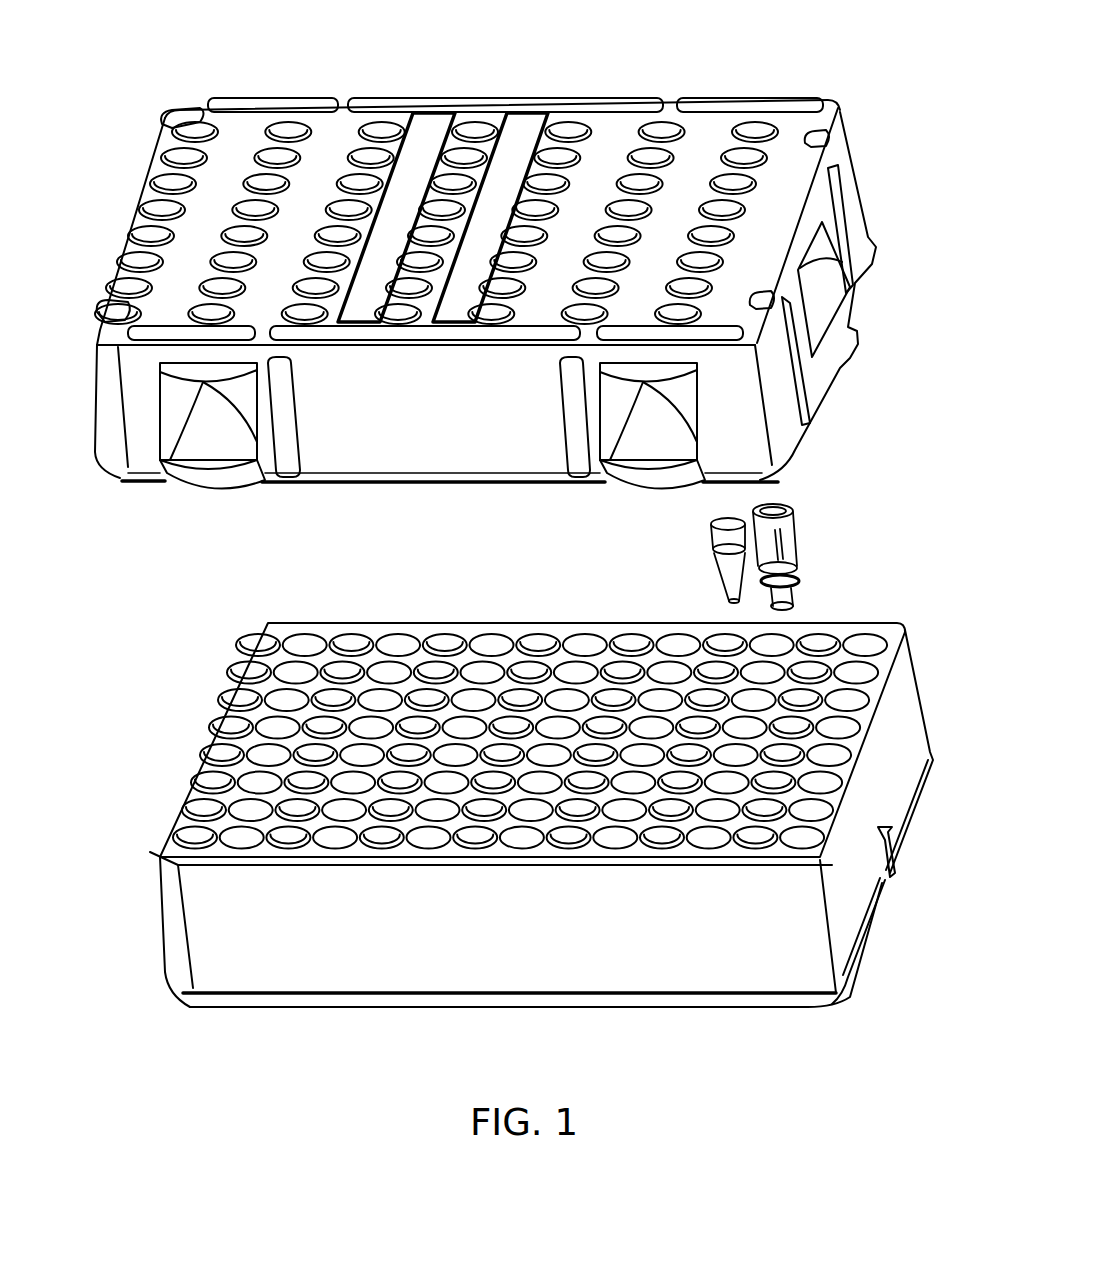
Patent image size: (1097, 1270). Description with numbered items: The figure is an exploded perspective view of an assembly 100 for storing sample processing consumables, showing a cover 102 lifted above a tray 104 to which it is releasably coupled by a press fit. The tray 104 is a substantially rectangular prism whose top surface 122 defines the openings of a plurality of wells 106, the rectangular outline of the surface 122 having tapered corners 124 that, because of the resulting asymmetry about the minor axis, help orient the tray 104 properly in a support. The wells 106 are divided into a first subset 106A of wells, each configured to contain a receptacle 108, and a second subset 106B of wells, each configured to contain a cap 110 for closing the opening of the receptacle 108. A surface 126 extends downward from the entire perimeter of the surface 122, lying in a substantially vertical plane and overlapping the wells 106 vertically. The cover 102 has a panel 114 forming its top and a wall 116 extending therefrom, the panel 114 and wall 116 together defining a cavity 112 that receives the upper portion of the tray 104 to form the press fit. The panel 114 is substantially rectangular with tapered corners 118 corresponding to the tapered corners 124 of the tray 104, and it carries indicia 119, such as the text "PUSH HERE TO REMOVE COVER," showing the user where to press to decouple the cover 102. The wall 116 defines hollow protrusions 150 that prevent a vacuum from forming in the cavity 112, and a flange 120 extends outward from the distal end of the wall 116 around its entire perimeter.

The assembly 100 is at (802, 54).
The cover 102 is at (100, 362).
The tray 104 is at (220, 940).
The wells 106 is at (310, 643).
The first subset of wells 106A is at (263, 605).
The second subset of wells 106B is at (314, 579).
The receptacle 108 is at (720, 542).
The cap 110 is at (782, 540).
The cavity 112 is at (168, 508).
The panel 114 is at (331, 160).
The wall 116 is at (843, 182).
The tapered corners 118 is at (182, 110).
The indicia 119 is at (428, 125).
The flange 120 is at (798, 452).
The surface 122 is at (850, 632).
The tapered corners 124 is at (233, 634).
The surface 126 is at (910, 713).
The hollow protrusions 150 is at (835, 194).